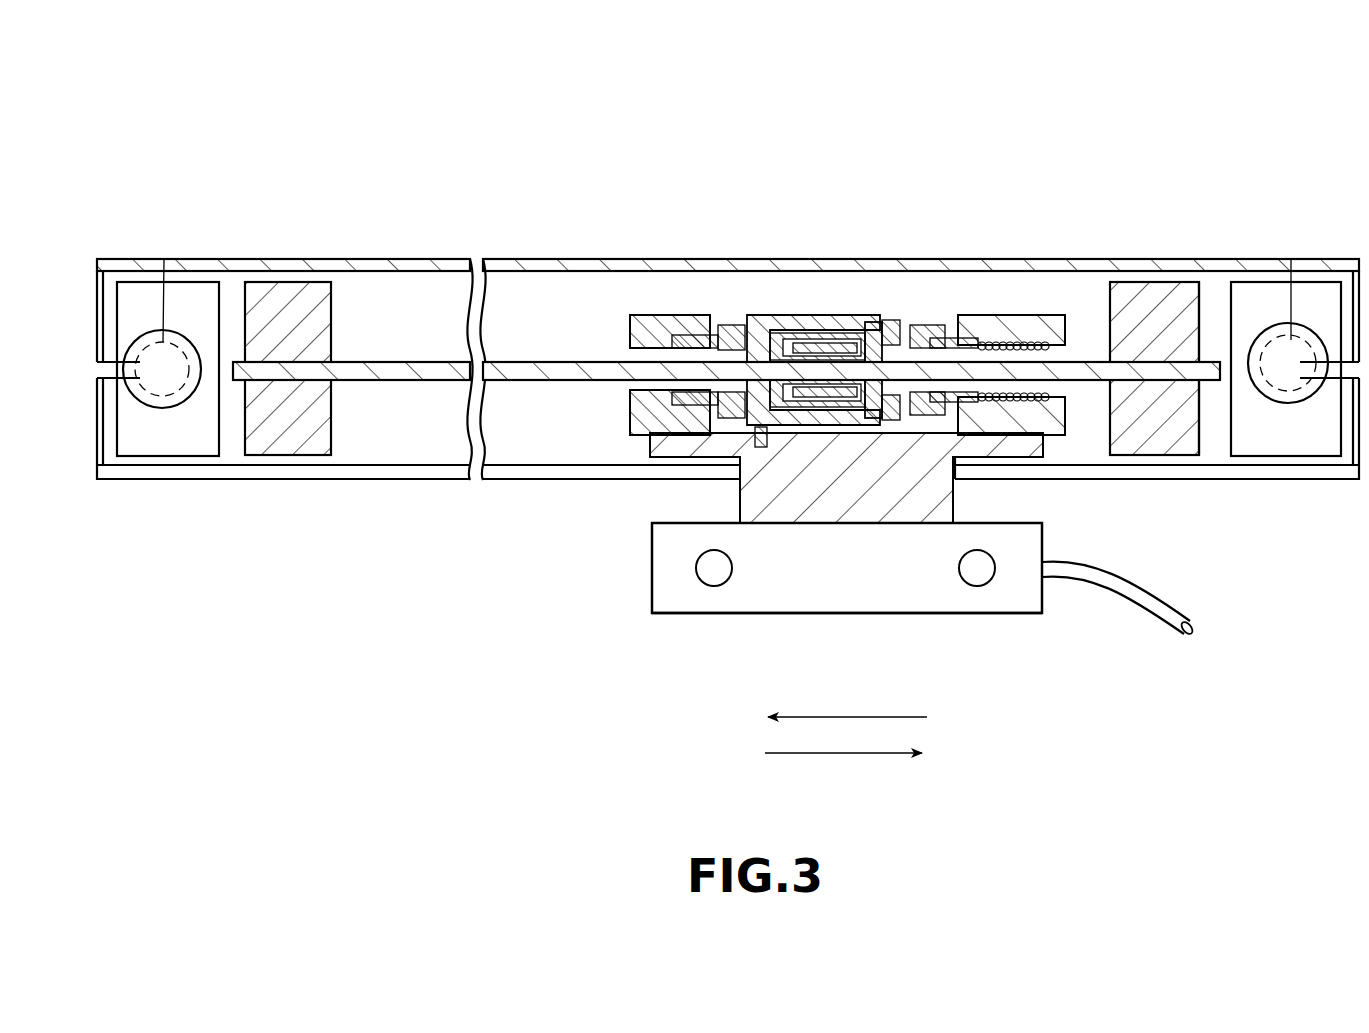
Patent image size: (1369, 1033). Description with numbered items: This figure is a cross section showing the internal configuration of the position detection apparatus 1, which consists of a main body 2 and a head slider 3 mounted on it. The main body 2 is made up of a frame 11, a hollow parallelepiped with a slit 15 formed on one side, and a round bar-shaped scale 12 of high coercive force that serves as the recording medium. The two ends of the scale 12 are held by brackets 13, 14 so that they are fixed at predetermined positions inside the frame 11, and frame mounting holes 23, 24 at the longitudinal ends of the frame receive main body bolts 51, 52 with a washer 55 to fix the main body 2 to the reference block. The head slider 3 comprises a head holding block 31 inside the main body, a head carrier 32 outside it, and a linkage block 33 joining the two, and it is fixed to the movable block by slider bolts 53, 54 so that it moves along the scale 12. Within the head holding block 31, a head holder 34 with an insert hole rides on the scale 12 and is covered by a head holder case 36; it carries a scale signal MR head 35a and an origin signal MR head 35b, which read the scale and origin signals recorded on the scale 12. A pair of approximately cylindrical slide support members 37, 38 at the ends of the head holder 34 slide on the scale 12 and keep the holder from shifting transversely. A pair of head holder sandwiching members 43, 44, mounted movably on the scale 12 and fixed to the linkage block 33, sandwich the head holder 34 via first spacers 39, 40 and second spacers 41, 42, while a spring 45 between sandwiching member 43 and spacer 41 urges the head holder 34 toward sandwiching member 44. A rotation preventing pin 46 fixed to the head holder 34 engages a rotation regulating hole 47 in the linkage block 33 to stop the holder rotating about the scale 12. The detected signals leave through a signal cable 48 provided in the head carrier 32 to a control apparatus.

The position detection apparatus 1 is at (836, 107).
The main body 2 is at (1074, 254).
The head slider 3 is at (724, 621).
The frame 11 is at (1147, 258).
The scale 12 is at (398, 362).
The bracket 13 is at (1190, 260).
The bracket 14 is at (290, 282).
The slit 15 is at (395, 486).
The frame mounting hole 23 is at (1291, 259).
The frame mounting hole 24 is at (164, 259).
The head holding block 31 is at (610, 325).
The head carrier 32 is at (652, 595).
The linkage block 33 is at (740, 510).
The head holder 34 is at (880, 322).
The scale signal MR head 35a is at (830, 333).
The origin signal MR head 35b is at (857, 333).
The head holder case 36 is at (800, 316).
The slide support member 37 is at (905, 320).
The slide support member 38 is at (745, 318).
The first spacer 39 is at (927, 325).
The first spacer 40 is at (735, 318).
The second spacer 41 is at (965, 338).
The second spacer 42 is at (713, 318).
The head holder sandwiching member 43 is at (1005, 316).
The head holder sandwiching member 44 is at (655, 315).
The spring 45 is at (1030, 342).
The rotation preventing pin 46 is at (752, 448).
The rotation regulating hole 47 is at (740, 458).
The signal cable 48 is at (1140, 608).
The main body bolt 51 is at (1296, 404).
The main body bolt 52 is at (176, 406).
The slider bolt 53 is at (977, 586).
The slider bolt 54 is at (703, 585).
The washer 55 is at (148, 447).